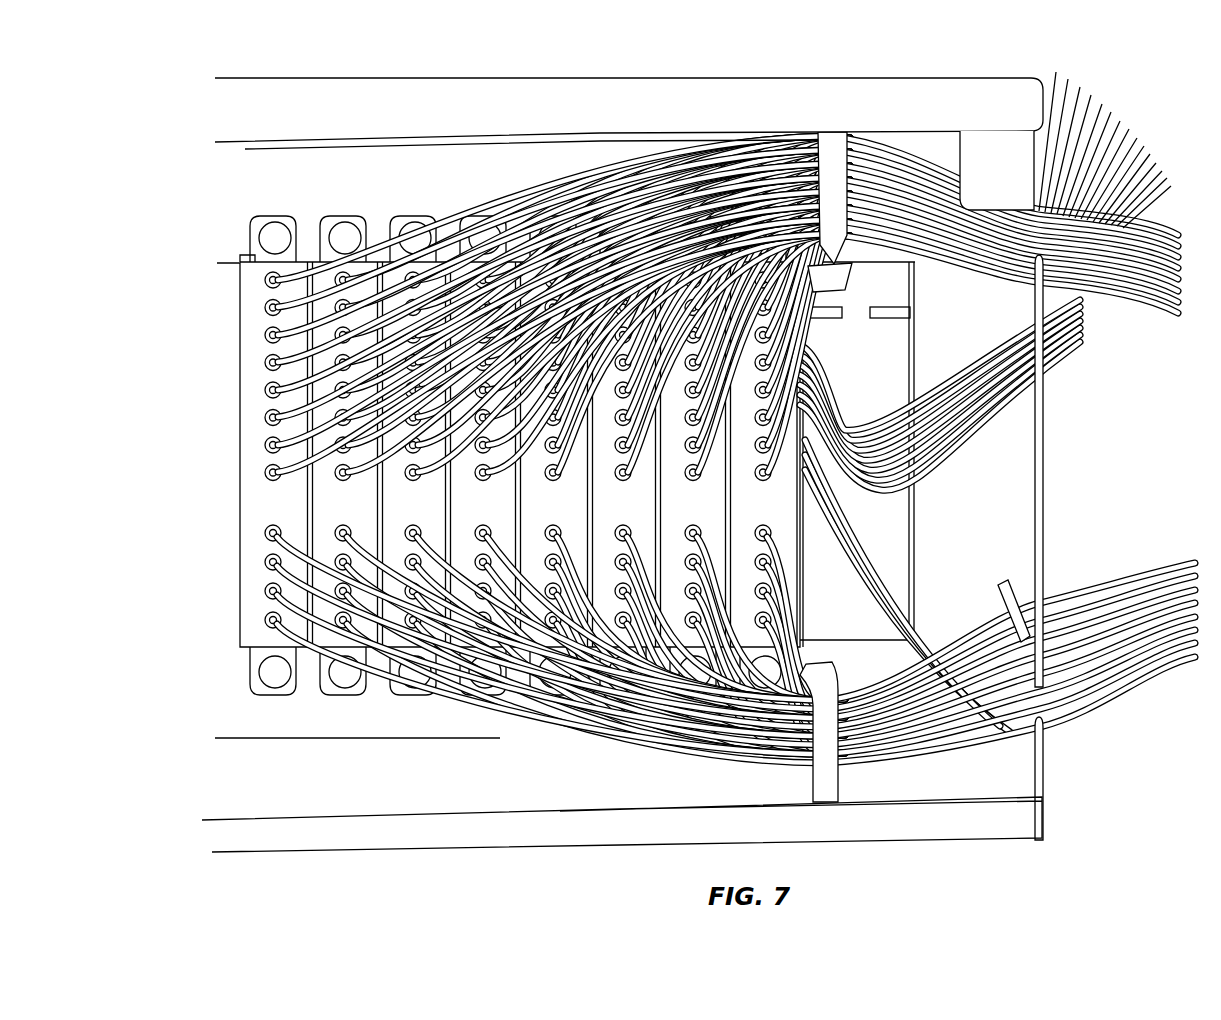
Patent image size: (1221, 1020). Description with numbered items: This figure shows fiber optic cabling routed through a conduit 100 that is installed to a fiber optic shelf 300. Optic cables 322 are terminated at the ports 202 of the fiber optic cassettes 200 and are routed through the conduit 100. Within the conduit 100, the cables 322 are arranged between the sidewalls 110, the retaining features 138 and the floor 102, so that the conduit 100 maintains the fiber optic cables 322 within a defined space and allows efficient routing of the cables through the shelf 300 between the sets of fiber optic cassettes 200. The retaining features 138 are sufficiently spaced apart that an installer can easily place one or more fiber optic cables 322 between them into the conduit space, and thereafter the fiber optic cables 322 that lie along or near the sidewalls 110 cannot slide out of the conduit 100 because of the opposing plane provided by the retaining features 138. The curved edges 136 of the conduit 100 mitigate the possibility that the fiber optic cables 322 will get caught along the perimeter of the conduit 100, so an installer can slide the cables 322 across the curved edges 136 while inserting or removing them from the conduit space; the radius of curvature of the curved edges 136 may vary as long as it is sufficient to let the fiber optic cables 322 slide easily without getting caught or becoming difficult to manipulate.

The shelf 300 is at (350, 62).
The ports 202 is at (752, 287).
The curved edges 136 is at (787, 290).
The fiber optic cassettes 200 is at (685, 500).
The retaining features 138 is at (893, 310).
The optic cables 322 is at (977, 367).
The conduit 100 is at (950, 502).
The sidewalls 110 is at (925, 515).
The floor 102 is at (852, 650).